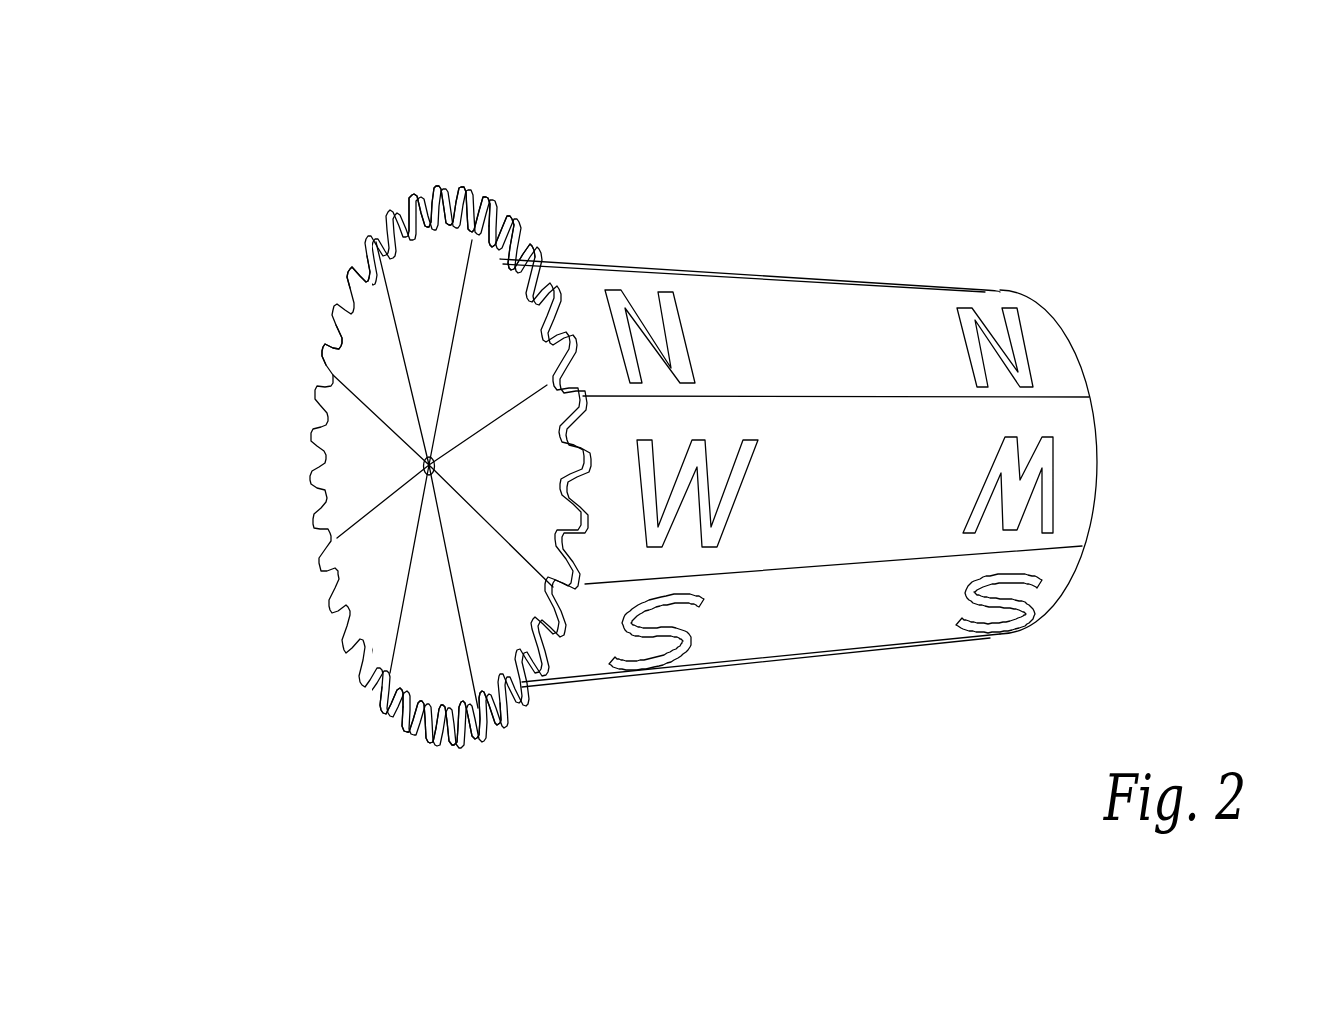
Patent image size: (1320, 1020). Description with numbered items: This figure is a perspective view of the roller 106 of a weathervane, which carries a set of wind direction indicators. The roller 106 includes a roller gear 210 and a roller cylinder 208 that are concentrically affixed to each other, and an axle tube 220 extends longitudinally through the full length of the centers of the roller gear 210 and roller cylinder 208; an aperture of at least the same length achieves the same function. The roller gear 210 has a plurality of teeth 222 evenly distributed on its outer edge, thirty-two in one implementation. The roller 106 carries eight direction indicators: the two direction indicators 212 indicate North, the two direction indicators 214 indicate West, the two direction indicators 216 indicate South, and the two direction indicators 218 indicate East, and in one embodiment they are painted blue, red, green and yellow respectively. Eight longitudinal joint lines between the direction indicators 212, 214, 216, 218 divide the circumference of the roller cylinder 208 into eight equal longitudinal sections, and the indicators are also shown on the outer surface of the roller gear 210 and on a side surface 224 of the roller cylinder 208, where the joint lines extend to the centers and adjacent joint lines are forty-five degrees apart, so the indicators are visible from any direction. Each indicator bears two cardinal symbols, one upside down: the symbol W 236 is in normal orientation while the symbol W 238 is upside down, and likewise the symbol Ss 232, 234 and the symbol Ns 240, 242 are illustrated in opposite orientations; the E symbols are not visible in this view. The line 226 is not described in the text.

The roller 106 is at (766, 854).
The roller cylinder 208 is at (1045, 313).
The roller gear 210 is at (417, 722).
The direction indicators 212 is at (380, 608).
The direction indicators 214 is at (347, 424).
The direction indicators 216 is at (362, 315).
The direction indicators 218 is at (413, 257).
The axle tube 220 is at (424, 477).
The teeth 222 is at (495, 234).
The side surface 224 is at (1068, 517).
The magnet segment divider 226 is at (860, 396).
The symbol S 232 is at (678, 640).
The symbol S 234 is at (1000, 607).
The symbol W 236 is at (742, 473).
The symbol W 238 is at (1017, 523).
The symbol N 240 is at (672, 310).
The symbol N 242 is at (1013, 318).